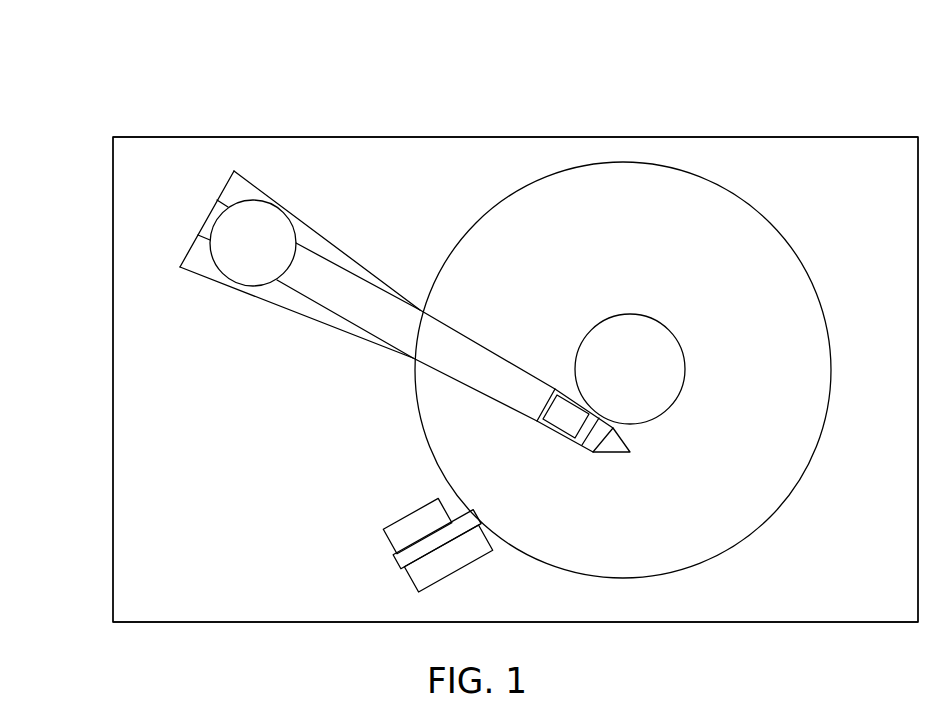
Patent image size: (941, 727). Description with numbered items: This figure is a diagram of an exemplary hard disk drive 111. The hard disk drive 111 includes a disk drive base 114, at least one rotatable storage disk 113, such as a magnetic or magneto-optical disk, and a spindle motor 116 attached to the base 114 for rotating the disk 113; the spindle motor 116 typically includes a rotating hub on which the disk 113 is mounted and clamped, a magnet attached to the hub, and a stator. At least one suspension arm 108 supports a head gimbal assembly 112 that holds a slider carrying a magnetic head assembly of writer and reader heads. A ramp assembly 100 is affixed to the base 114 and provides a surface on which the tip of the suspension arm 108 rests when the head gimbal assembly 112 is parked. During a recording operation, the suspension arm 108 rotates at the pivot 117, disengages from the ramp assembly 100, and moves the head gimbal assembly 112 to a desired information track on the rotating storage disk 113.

The hard disk drive 111 is at (349, 137).
The disk drive base 114 is at (135, 514).
The rotatable storage disk 113 is at (458, 240).
The spindle motor 116 is at (628, 323).
The pivot 117 is at (243, 275).
The suspension arm 108 is at (375, 337).
The head gimbal assembly 112 is at (566, 439).
The ramp assembly 100 is at (393, 558).